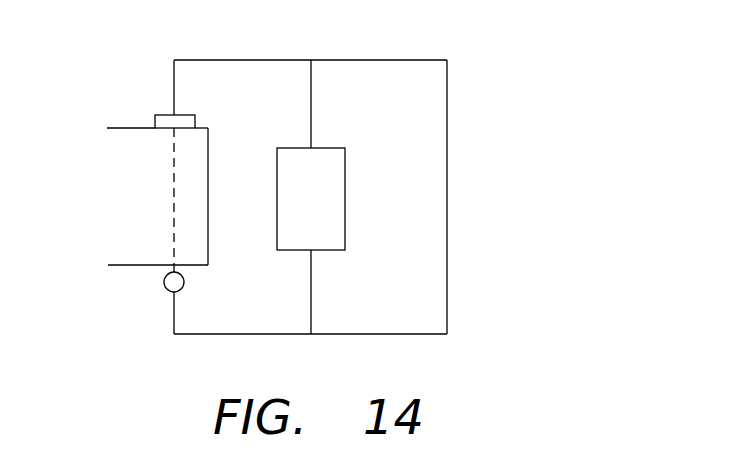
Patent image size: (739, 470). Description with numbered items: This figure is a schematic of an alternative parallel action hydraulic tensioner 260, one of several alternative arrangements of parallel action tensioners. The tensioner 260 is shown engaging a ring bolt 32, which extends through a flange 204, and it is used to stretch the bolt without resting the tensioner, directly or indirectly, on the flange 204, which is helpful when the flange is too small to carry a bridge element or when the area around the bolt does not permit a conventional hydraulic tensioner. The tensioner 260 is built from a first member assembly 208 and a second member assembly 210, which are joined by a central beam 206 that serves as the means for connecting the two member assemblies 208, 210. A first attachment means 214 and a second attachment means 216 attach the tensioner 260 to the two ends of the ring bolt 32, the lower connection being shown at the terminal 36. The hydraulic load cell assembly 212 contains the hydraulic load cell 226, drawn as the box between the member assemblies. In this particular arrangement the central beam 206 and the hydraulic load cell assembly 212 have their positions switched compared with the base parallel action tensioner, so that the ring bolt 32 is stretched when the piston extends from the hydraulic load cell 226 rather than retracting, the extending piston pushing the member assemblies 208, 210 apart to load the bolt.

The ring bolt 32 is at (173, 208).
The terminal 36 is at (163, 284).
The flange 204 is at (108, 129).
The central beam 206 is at (447, 295).
The first member assembly 208 is at (260, 60).
The second member assembly 210 is at (392, 335).
The hydraulic load cell assembly 212 is at (345, 227).
The first attachment means 214 is at (174, 77).
The second attachment means 216 is at (173, 327).
The hydraulic load cell 226 is at (354, 193).
The alternative parallel action tensioner 260 is at (308, 192).